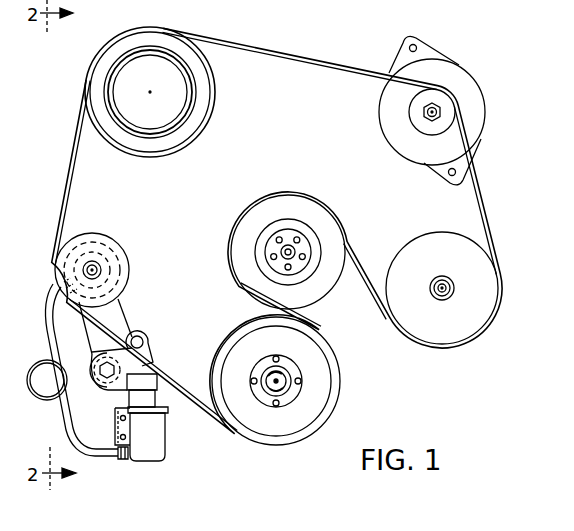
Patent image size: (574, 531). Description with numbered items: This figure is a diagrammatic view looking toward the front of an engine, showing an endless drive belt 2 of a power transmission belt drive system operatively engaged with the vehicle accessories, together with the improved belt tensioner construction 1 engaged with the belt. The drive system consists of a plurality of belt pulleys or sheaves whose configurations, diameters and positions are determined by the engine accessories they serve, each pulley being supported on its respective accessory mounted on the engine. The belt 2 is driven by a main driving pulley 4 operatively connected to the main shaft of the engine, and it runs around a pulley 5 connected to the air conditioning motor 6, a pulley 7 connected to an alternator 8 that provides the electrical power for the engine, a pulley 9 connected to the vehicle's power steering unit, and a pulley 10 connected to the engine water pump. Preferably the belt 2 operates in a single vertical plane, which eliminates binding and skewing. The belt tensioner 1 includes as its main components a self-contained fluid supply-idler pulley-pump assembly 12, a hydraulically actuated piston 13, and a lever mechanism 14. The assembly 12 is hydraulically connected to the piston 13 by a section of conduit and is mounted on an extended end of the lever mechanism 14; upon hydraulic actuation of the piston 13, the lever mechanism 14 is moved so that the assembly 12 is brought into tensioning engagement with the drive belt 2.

The belt tensioner construction 1 is at (123, 462).
The endless drive belt 2 is at (287, 56).
The main driving pulley 4 is at (319, 398).
The pulley 5 is at (188, 58).
The air conditioning motor 6 is at (95, 59).
The pulley 7 is at (447, 103).
The alternator 8 is at (443, 67).
The pulley 9 is at (485, 300).
The pulley 10 is at (262, 214).
The self-contained fluid supply-idler pulley-pump assembly 12 is at (121, 240).
The hydraulically actuated piston 13 is at (170, 453).
The lever mechanism 14 is at (148, 333).